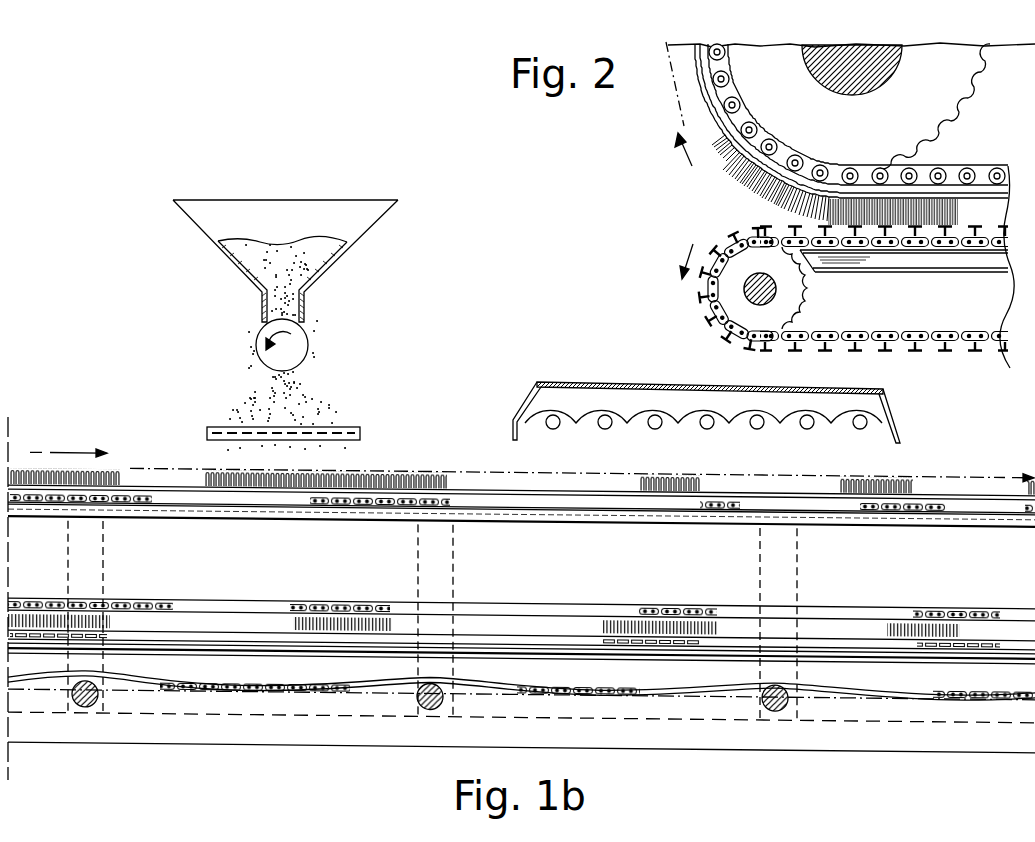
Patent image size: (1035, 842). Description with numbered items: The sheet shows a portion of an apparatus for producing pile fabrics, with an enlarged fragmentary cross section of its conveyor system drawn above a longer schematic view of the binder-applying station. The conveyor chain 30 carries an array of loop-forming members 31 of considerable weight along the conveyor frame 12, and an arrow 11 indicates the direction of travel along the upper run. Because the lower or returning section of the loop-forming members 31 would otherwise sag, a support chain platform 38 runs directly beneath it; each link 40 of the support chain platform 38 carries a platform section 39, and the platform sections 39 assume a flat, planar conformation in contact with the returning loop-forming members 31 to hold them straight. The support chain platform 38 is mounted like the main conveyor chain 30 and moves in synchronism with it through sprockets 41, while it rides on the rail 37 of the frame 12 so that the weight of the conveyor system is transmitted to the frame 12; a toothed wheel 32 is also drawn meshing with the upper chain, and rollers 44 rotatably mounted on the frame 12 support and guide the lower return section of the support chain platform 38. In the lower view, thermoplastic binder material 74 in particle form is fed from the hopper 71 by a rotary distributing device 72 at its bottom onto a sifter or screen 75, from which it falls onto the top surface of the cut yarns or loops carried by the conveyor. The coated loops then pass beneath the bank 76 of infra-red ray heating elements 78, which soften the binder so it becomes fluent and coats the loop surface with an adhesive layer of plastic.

In FIG. 1B, the conveyor path direction arrow 11 is at (144, 458).
In FIG. 1B, the conveyor frame 12 is at (787, 575).
In FIG. 2, the conveyor chain 30 is at (957, 173).
In FIG. 1B, the conveyor chain 30 is at (305, 598).
In FIG. 2, the loop-forming members 31 is at (744, 164).
In FIG. 2, the drive sprocket 32 is at (950, 103).
In FIG. 2, the rail 37 is at (923, 258).
In FIG. 1B, the rail 37 is at (530, 514).
In FIG. 2, the support chain platform 38 is at (828, 333).
In FIG. 1B, the support chain platform 38 is at (921, 644).
In FIG. 2, the platform sections 39 is at (738, 234).
In FIG. 2, the link 40 is at (712, 244).
In FIG. 2, the sprockets 41 is at (793, 289).
In FIG. 1B, the rollers 44 is at (85, 707).
In FIG. 1B, the hopper 71 is at (322, 273).
In FIG. 1B, the rotary distributing device 72 is at (308, 343).
In FIG. 1B, the thermoplastic binder material 74 is at (310, 395).
In FIG. 1B, the sifter or screen 75 is at (361, 433).
In FIG. 1B, the bank of infra-red ray heating elements 76 is at (890, 397).
In FIG. 1B, the infra-red ray heating elements 78 is at (557, 428).